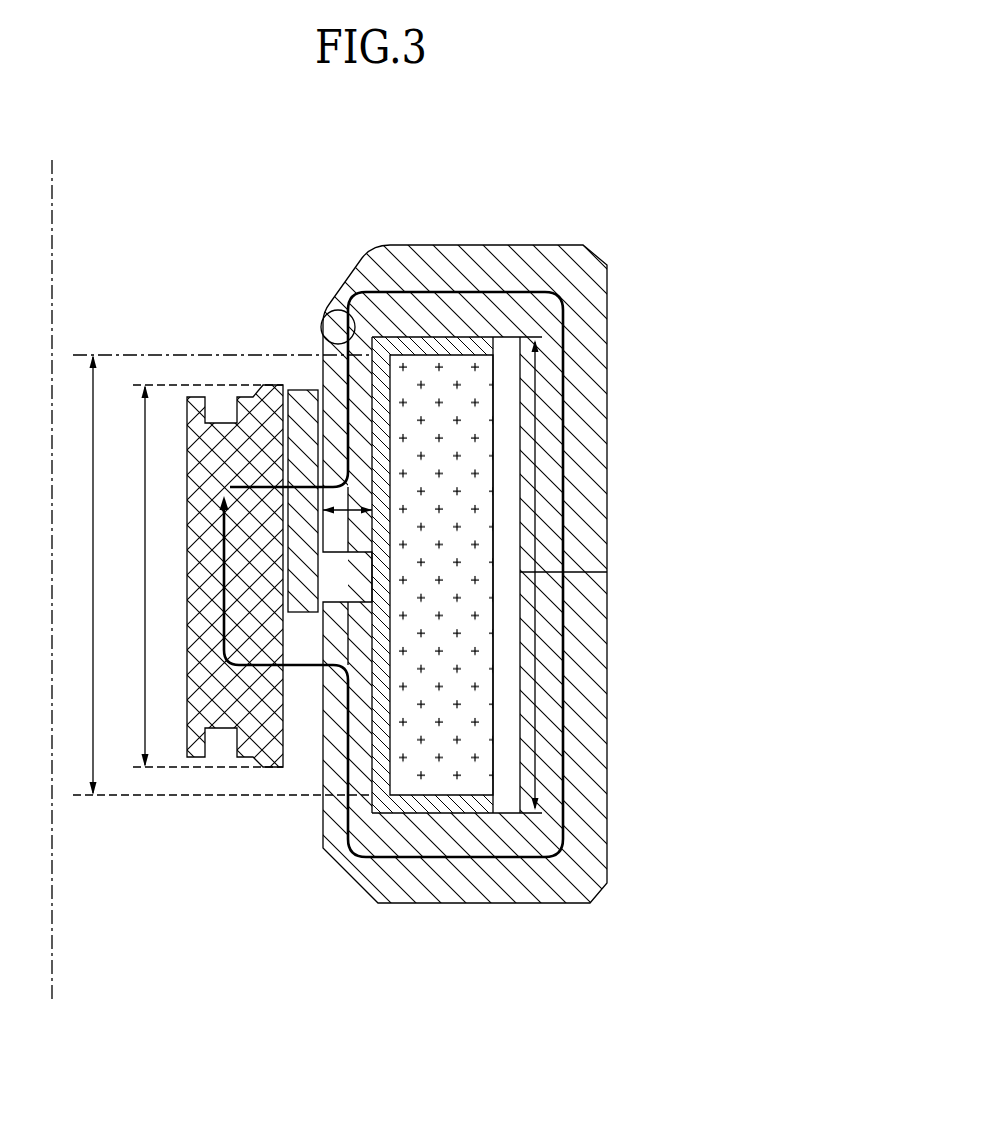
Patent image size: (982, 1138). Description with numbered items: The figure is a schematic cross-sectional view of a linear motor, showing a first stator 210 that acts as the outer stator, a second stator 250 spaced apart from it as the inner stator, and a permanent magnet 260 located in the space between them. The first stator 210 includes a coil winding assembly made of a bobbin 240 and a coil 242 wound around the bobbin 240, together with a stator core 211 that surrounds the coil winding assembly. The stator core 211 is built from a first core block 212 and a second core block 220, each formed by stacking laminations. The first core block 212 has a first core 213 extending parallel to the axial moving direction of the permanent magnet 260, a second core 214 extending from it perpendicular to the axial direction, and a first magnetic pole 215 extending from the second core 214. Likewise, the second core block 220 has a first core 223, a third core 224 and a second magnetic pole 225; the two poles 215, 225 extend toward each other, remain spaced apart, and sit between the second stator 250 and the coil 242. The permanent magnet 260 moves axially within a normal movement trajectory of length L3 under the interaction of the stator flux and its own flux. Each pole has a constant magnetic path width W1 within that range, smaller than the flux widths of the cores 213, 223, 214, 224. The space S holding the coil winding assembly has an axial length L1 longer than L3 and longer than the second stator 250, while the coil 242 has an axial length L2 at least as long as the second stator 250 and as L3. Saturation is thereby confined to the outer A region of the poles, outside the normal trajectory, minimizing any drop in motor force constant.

The first stator 210 is at (458, 255).
The stator core 211 is at (569, 574).
The first core block 212 is at (540, 432).
The first core 213 is at (596, 454).
The second core 214 is at (500, 300).
The first magnetic pole 215 is at (360, 428).
The second core block 220 is at (540, 714).
The first core 223 is at (598, 655).
The third core 224 is at (510, 835).
The second magnetic pole 225 is at (360, 735).
The bobbin 240 is at (390, 812).
The coil 242 is at (455, 790).
The second stator 250 is at (222, 420).
The permanent magnet 260 is at (300, 392).
The space S is at (510, 386).
The A region A is at (348, 312).
The magnetic path width W1 is at (347, 524).
The axial direction length of the space L1 is at (535, 575).
The axial direction length of the coil L2 is at (83, 575).
The length of the normal movement trajectory L3 is at (134, 576).